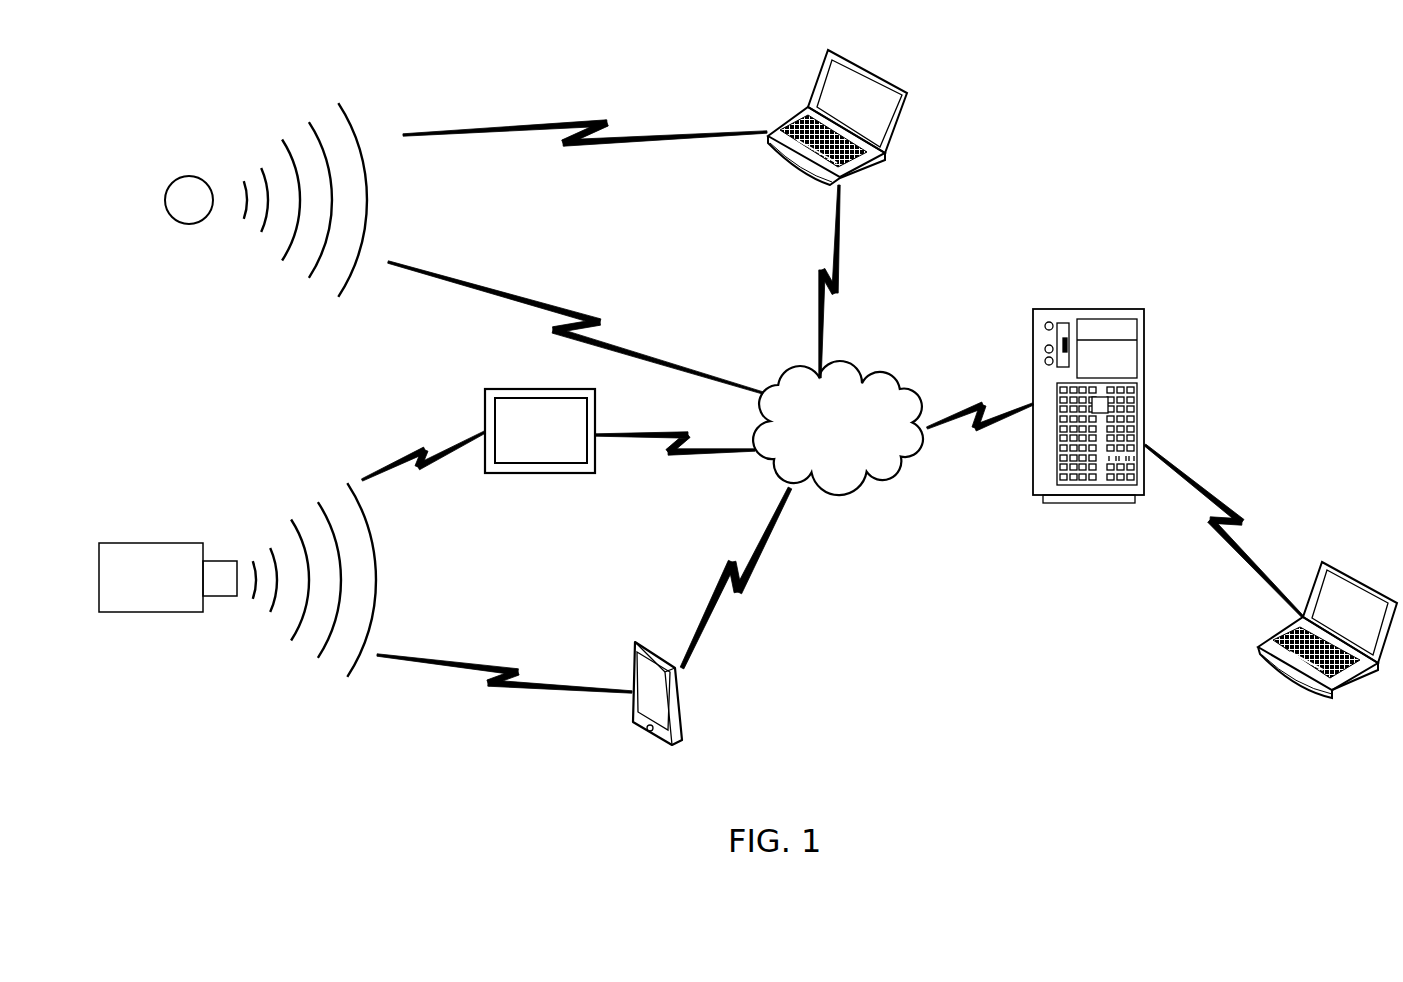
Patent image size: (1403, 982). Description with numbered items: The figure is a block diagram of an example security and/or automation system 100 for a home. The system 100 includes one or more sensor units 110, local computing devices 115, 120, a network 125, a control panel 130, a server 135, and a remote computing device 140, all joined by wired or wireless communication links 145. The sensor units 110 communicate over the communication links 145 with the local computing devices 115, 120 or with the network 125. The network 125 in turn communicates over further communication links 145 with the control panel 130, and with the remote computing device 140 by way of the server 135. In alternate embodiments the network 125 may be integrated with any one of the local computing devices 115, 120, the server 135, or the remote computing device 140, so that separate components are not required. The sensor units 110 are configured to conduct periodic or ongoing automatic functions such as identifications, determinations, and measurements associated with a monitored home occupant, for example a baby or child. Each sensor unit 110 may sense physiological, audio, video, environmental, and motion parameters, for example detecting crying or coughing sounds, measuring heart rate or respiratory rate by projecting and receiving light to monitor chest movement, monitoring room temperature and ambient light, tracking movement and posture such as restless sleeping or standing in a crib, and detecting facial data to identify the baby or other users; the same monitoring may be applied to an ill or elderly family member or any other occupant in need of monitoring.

The security and/or automation system 100 is at (199, 793).
The sensor unit 110 is at (190, 230).
The local computing device 115 is at (808, 175).
The local computing device 120 is at (647, 733).
The network 125 is at (865, 366).
The control panel 130 is at (545, 470).
The server 135 is at (1110, 308).
The remote computing device 140 is at (1293, 683).
The communication link 145 is at (518, 125).